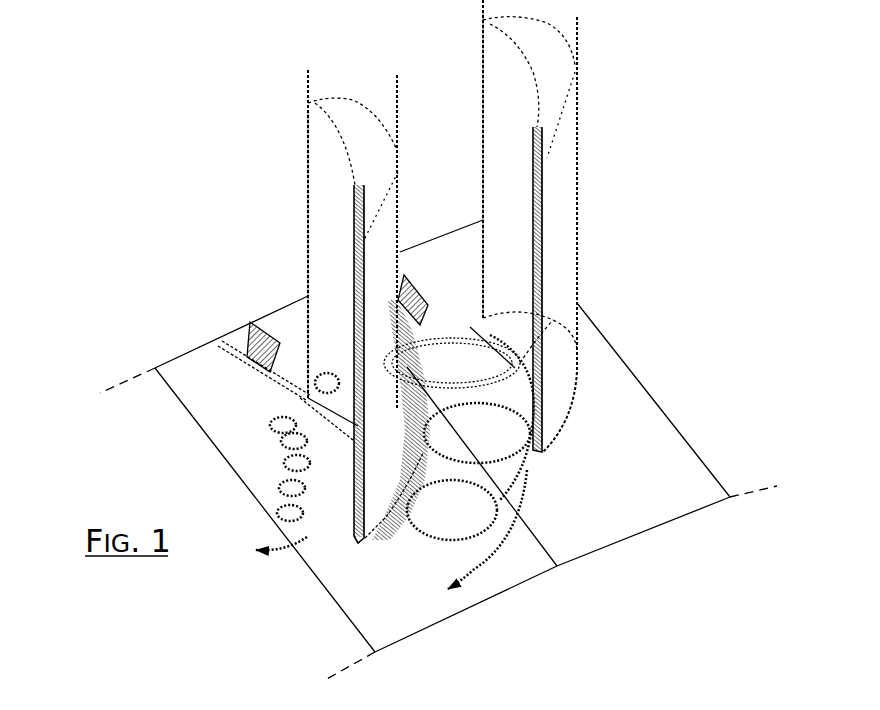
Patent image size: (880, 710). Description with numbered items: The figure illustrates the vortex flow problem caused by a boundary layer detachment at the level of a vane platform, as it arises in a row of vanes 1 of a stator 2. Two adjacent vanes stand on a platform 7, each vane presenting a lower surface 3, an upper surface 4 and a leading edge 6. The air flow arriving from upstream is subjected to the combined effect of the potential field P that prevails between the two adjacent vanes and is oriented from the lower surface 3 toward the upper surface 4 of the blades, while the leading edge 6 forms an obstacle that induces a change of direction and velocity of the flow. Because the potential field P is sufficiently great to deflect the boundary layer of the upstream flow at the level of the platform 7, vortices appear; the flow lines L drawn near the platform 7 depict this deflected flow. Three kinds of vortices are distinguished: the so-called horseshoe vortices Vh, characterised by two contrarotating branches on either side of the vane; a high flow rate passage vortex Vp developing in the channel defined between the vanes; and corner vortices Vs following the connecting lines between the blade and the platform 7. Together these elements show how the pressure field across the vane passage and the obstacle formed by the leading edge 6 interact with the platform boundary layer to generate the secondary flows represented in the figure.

The row of vanes 1 is at (471, 43).
The stator 2 is at (129, 236).
The lower surface 3 is at (323, 163).
The upper surface 4 is at (372, 290).
The leading edge 6 is at (308, 235).
The platform 7 is at (203, 413).
The potential field P is at (497, 142).
The flow lines L is at (245, 341).
The horseshoe vortices Vh is at (281, 566).
The corner vortices Vs is at (436, 523).
The passage vortex Vp is at (506, 556).